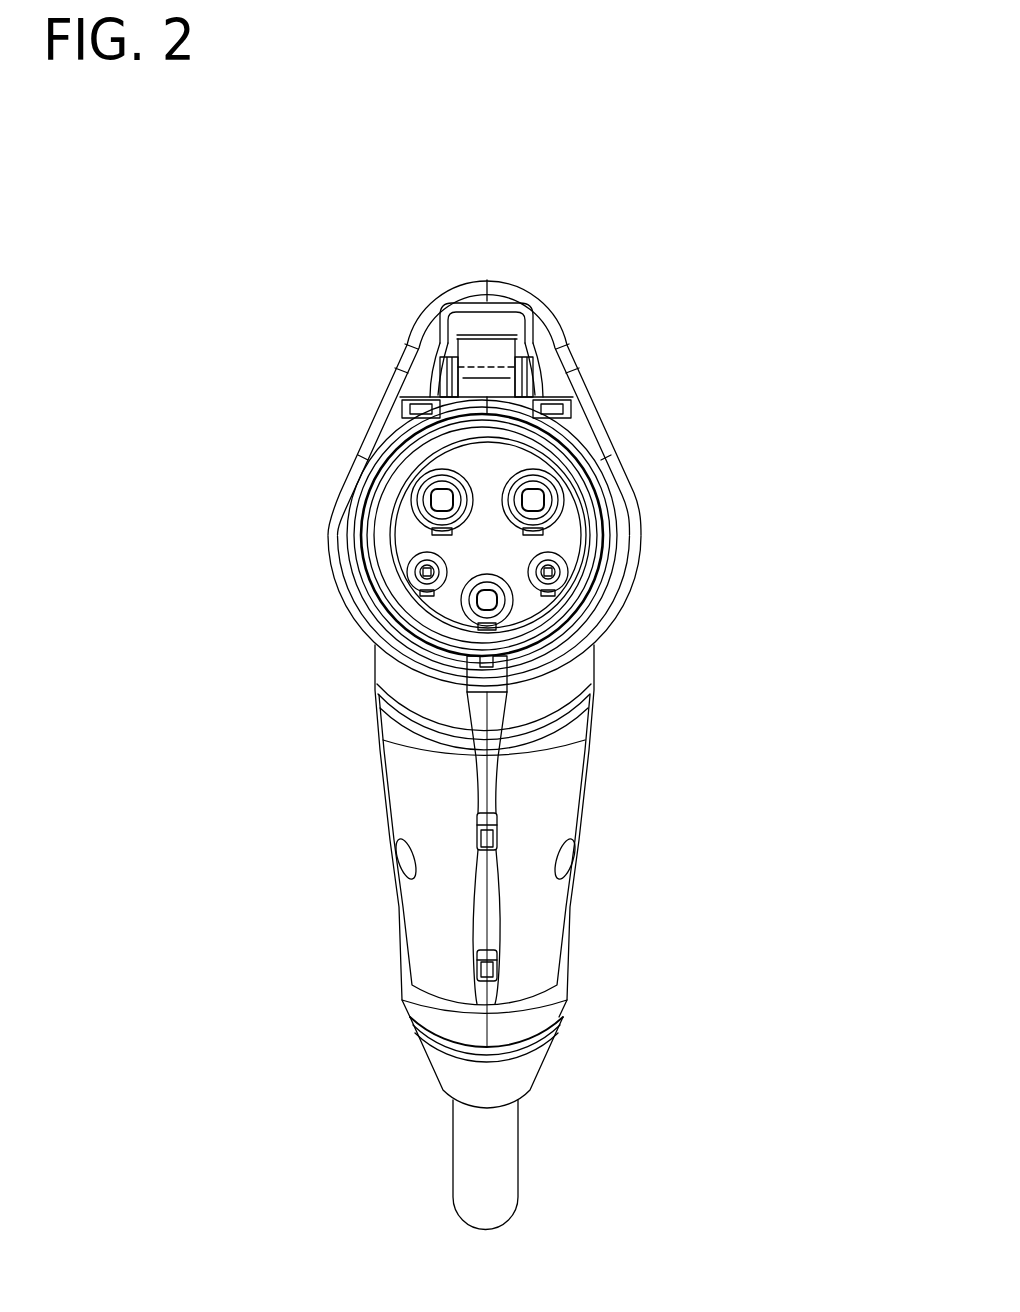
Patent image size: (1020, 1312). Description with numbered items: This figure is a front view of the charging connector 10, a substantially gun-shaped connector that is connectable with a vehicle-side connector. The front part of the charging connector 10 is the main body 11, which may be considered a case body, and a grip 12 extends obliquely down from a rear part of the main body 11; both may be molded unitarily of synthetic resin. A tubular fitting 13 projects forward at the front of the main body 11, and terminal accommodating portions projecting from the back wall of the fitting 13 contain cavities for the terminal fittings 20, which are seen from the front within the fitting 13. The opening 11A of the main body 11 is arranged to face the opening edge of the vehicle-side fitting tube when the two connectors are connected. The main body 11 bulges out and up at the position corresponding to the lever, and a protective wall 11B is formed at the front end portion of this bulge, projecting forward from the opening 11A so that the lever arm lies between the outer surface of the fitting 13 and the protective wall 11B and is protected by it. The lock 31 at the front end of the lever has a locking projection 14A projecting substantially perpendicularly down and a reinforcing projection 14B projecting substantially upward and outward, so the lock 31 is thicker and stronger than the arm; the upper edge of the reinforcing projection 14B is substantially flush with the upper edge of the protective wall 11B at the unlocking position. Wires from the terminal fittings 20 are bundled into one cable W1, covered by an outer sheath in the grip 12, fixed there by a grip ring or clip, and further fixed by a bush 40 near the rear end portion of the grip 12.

The charging connector 10 is at (489, 133).
The main body 11 is at (283, 558).
The opening 11A is at (635, 538).
The protective wall 11B is at (500, 283).
The grip 12 is at (335, 805).
The tubular fitting 13 is at (587, 492).
The locking projection 14A is at (495, 388).
The reinforcing projection 14B is at (480, 322).
The terminal fitting 20 is at (535, 492).
The lock 31 is at (498, 350).
The bush 40 is at (443, 1067).
The cable W1 is at (498, 1145).